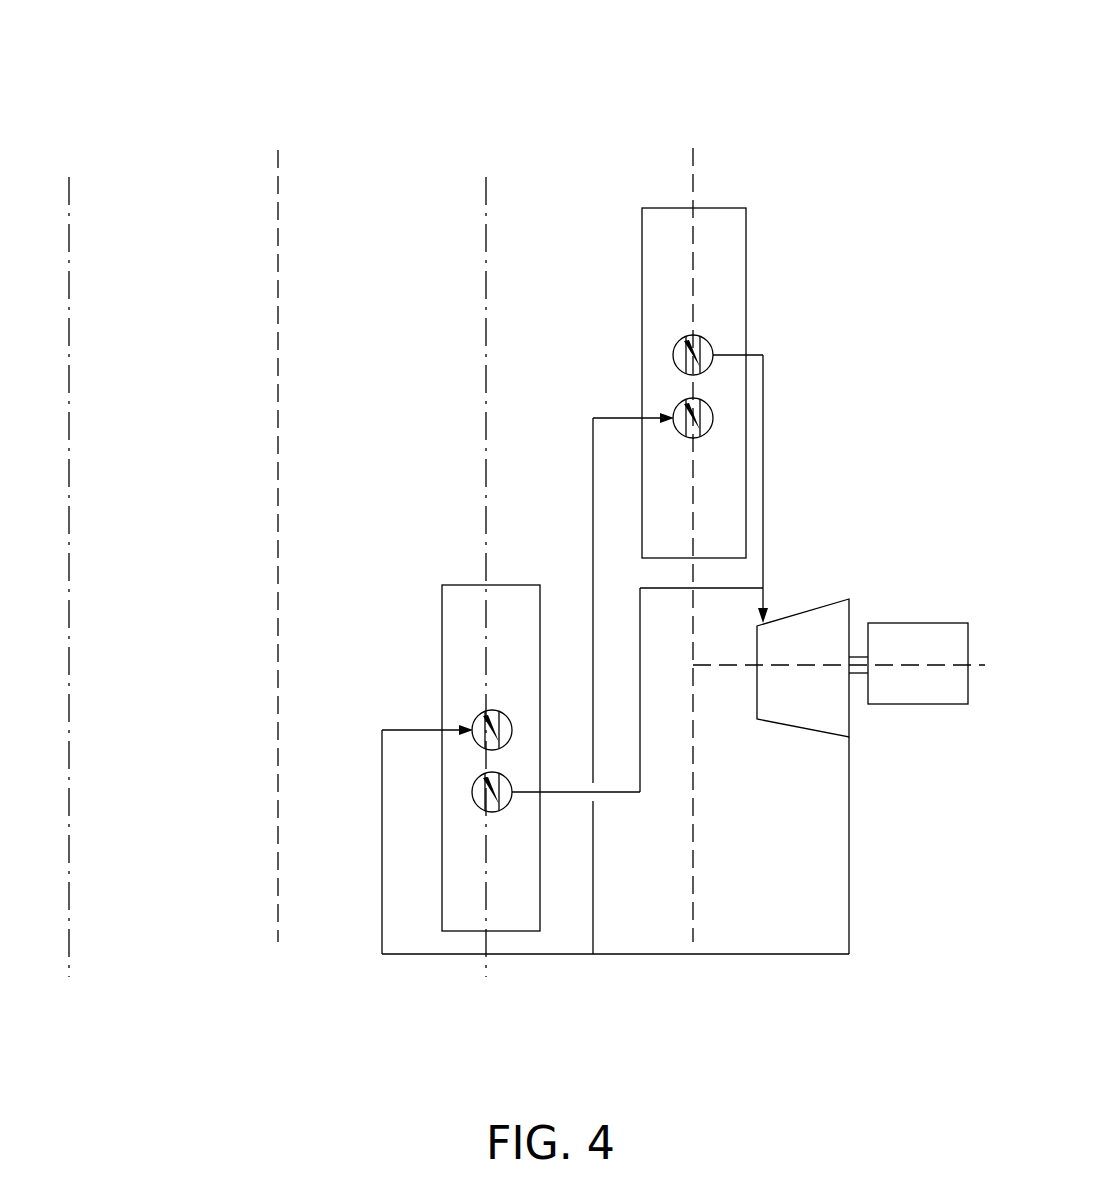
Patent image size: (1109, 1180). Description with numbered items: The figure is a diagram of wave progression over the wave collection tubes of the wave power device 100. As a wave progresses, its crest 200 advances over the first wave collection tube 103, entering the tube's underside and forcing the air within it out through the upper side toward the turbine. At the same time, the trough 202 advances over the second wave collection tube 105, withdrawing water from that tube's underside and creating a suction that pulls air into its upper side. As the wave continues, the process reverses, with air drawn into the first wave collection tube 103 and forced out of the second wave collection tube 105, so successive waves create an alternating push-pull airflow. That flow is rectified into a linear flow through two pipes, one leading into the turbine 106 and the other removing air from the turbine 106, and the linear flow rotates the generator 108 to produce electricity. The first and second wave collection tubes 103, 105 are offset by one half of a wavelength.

The wave power device 100 is at (670, 74).
The first wave collection tube 103 is at (755, 473).
The second wave collection tube 105 is at (452, 655).
The turbine 106 is at (817, 625).
The generator 108 is at (928, 636).
The crest 200 is at (294, 185).
The trough 202 is at (82, 204).